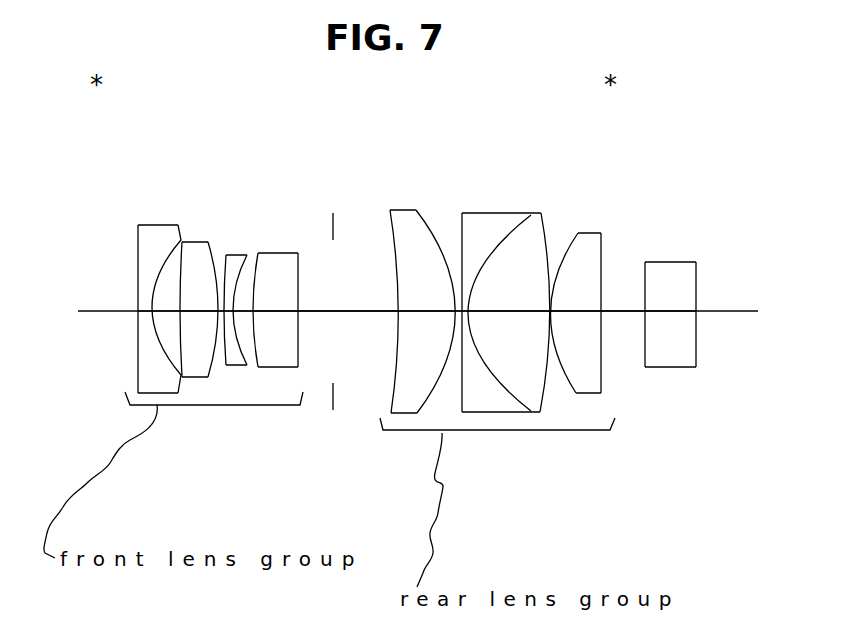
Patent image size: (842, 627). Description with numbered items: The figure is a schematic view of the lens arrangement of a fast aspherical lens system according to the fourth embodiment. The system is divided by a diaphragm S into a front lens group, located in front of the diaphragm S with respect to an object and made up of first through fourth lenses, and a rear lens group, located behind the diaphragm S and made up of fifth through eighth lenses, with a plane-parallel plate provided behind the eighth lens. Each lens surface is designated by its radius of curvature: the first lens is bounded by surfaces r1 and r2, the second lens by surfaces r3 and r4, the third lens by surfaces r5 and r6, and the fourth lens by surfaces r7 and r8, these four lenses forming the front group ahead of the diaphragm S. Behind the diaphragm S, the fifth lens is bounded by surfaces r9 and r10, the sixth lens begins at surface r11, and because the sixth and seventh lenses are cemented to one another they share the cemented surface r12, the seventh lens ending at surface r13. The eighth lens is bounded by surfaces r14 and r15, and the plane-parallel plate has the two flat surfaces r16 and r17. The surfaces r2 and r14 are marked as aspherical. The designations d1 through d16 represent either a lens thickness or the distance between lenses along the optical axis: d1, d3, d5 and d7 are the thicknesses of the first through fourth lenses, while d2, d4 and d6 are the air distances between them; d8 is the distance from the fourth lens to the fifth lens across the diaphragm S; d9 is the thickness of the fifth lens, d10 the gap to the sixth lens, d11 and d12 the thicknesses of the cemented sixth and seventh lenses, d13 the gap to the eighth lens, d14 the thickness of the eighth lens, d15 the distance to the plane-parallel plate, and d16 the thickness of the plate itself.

The diaphragm S is at (333, 230).
The radius of curvature of first lens surface r1 is at (138, 225).
The radius of curvature of second lens surface r2 is at (180, 225).
The radius of curvature of third lens surface r3 is at (182, 242).
The radius of curvature of fourth lens surface r4 is at (208, 242).
The radius of curvature of fifth lens surface r5 is at (226, 255).
The radius of curvature of sixth lens surface r6 is at (247, 255).
The radius of curvature of seventh lens surface r7 is at (258, 253).
The radius of curvature of eighth lens surface r8 is at (298, 253).
The radius of curvature of ninth lens surface r9 is at (390, 210).
The radius of curvature of tenth lens surface r10 is at (416, 210).
The radius of curvature of eleventh lens surface r11 is at (462, 213).
The radius of curvature of twelfth lens surface r12 is at (531, 215).
The radius of curvature of thirteenth lens surface r13 is at (541, 213).
The radius of curvature of fourteenth lens surface r14 is at (578, 233).
The radius of curvature of fifteenth lens surface r15 is at (601, 233).
The radius of curvature of sixteenth lens surface r16 is at (645, 262).
The radius of curvature of seventeenth lens surface r17 is at (696, 262).
The lens thickness d1 is at (145, 311).
The distance between lenses d2 is at (166, 311).
The lens thickness d3 is at (199, 311).
The distance between lenses d4 is at (221, 311).
The lens thickness d5 is at (228, 311).
The distance between lenses d6 is at (247, 311).
The lens thickness d7 is at (277, 311).
The distance between lenses d8 is at (347, 311).
The lens thickness d9 is at (425, 311).
The distance between lenses d10 is at (457, 311).
The lens thickness d11 is at (462, 311).
The lens thickness d12 is at (508, 311).
The distance between lenses d13 is at (549, 311).
The lens thickness d14 is at (573, 311).
The distance between lenses d15 is at (622, 311).
The lens thickness d16 is at (667, 311).